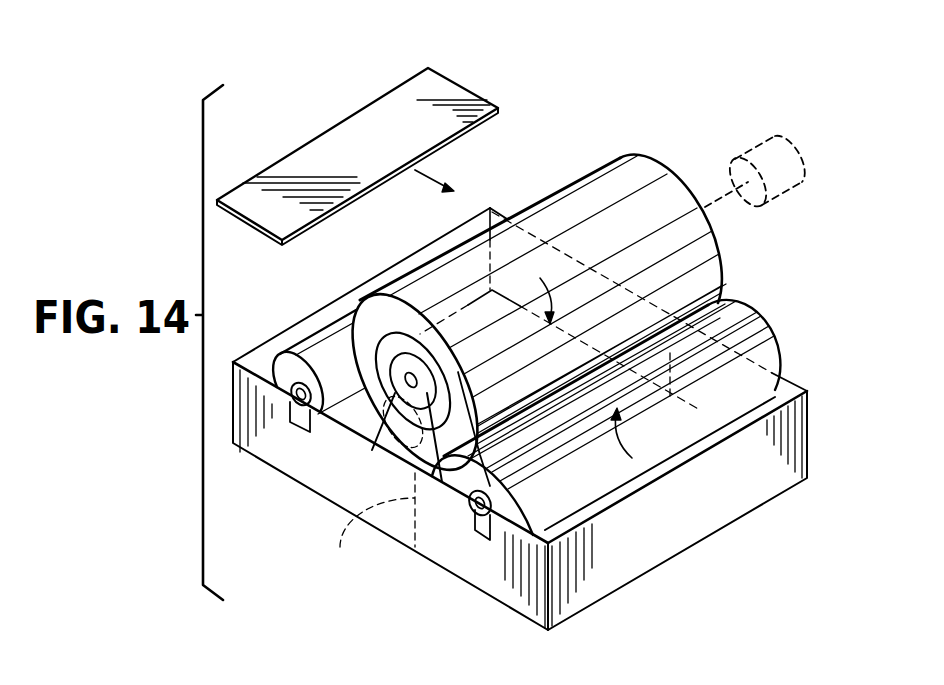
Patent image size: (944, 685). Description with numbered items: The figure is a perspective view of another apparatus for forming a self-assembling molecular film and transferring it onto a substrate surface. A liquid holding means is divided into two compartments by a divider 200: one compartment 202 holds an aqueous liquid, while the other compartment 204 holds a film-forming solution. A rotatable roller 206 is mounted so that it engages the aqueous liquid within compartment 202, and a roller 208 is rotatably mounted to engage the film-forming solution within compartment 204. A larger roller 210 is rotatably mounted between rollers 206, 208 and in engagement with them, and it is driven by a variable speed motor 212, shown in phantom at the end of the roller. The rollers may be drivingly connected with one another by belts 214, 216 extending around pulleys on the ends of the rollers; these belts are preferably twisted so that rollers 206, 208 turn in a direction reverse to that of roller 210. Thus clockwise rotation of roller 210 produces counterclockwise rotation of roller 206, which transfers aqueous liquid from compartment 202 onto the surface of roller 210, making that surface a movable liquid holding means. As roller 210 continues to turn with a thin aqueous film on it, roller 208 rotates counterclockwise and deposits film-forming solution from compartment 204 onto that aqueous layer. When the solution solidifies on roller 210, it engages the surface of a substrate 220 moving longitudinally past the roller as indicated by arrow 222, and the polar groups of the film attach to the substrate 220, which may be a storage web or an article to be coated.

The divider 200 is at (444, 571).
The compartment 202 is at (790, 385).
The compartment 204 is at (374, 288).
The rotatable roller 206 is at (737, 317).
The roller 208 is at (327, 348).
The roller 210 is at (632, 168).
The variable speed motor 212 is at (758, 138).
The belt 214 is at (387, 418).
The belt 216 is at (470, 380).
The substrate 220 is at (400, 108).
The arrow 222 is at (437, 182).